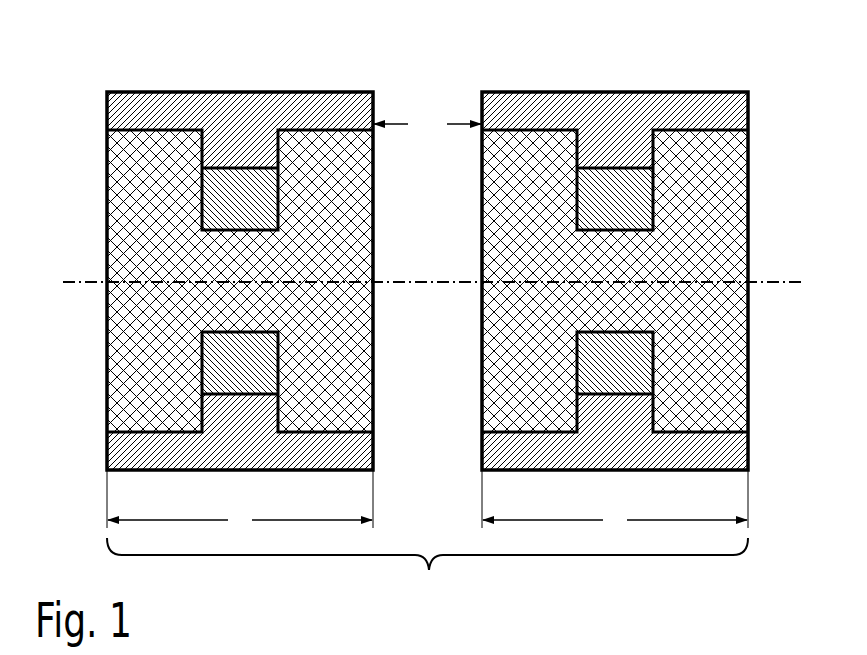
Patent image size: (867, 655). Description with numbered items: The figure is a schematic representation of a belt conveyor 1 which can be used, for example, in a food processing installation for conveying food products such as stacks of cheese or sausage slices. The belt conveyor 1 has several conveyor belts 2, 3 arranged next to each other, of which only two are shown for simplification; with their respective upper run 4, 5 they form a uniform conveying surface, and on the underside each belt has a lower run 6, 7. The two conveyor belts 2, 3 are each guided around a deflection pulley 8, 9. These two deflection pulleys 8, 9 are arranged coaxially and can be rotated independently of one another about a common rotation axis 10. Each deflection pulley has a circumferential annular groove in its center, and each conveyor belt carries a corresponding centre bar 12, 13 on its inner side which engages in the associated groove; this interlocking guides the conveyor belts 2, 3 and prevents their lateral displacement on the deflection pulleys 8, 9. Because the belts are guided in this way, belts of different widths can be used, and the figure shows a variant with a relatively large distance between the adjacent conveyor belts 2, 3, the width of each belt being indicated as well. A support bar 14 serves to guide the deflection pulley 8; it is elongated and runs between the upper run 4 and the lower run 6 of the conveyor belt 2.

The belt conveyor 1 is at (422, 306).
The conveyor belt 2 is at (214, 259).
The conveyor belt 3 is at (646, 255).
The upper run of conveyor belt 4 is at (311, 98).
The upper run of conveyor belt 5 is at (690, 105).
The lower run of conveyor belt 6 is at (328, 463).
The lower run of conveyor belt 7 is at (710, 450).
The deflection pulley 8 is at (155, 225).
The deflection pulley 9 is at (697, 221).
The rotation axis 10 is at (63, 282).
The centre bar 12 is at (233, 153).
The centre bar 13 is at (627, 158).
The support bar 14 is at (227, 363).